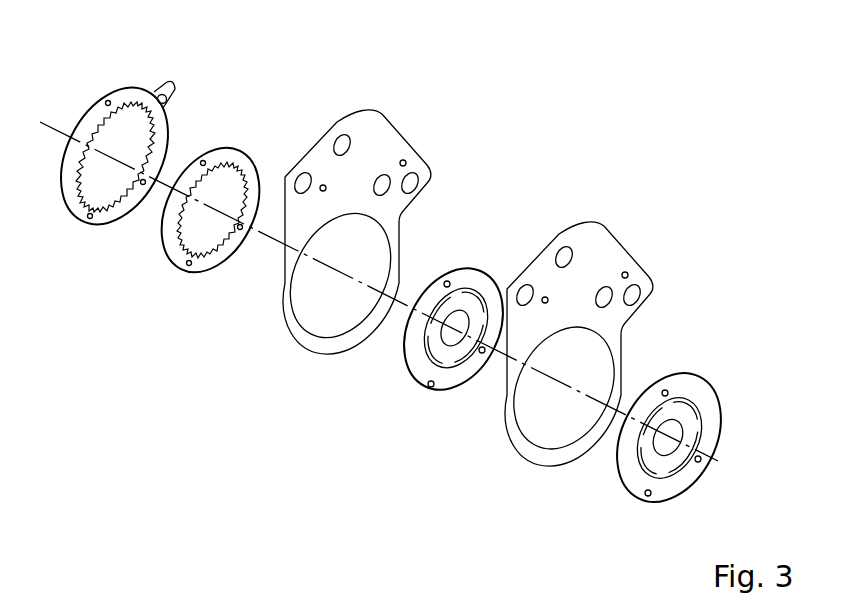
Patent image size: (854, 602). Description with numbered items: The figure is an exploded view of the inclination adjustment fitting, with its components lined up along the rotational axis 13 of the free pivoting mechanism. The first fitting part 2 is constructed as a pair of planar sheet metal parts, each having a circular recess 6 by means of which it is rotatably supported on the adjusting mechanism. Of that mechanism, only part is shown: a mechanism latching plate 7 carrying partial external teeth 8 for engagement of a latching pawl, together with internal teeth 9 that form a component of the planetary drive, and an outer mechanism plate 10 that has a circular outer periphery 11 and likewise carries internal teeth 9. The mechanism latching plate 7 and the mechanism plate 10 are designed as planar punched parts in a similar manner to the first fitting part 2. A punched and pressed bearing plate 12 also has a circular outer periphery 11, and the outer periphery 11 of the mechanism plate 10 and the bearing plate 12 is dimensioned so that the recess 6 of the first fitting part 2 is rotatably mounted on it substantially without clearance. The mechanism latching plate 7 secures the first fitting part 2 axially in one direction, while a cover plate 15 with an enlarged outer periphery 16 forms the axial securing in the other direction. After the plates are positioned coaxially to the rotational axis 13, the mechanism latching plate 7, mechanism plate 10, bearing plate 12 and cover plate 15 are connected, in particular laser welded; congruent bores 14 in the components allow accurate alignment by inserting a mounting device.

The first fitting part 2 is at (482, 283).
The circular recess 6 is at (334, 321).
The mechanism latching plate 7 is at (140, 93).
The partial external teeth 8 is at (115, 128).
The internal teeth 9 is at (110, 202).
The outer mechanism plate 10 is at (332, 243).
The circular outer periphery 11 is at (228, 148).
The bearing plate 12 is at (413, 368).
The rotational axis 13 is at (738, 471).
The congruent bores 14 is at (92, 220).
The cover plate 15 is at (668, 431).
The enlarged outer periphery 16 is at (700, 372).